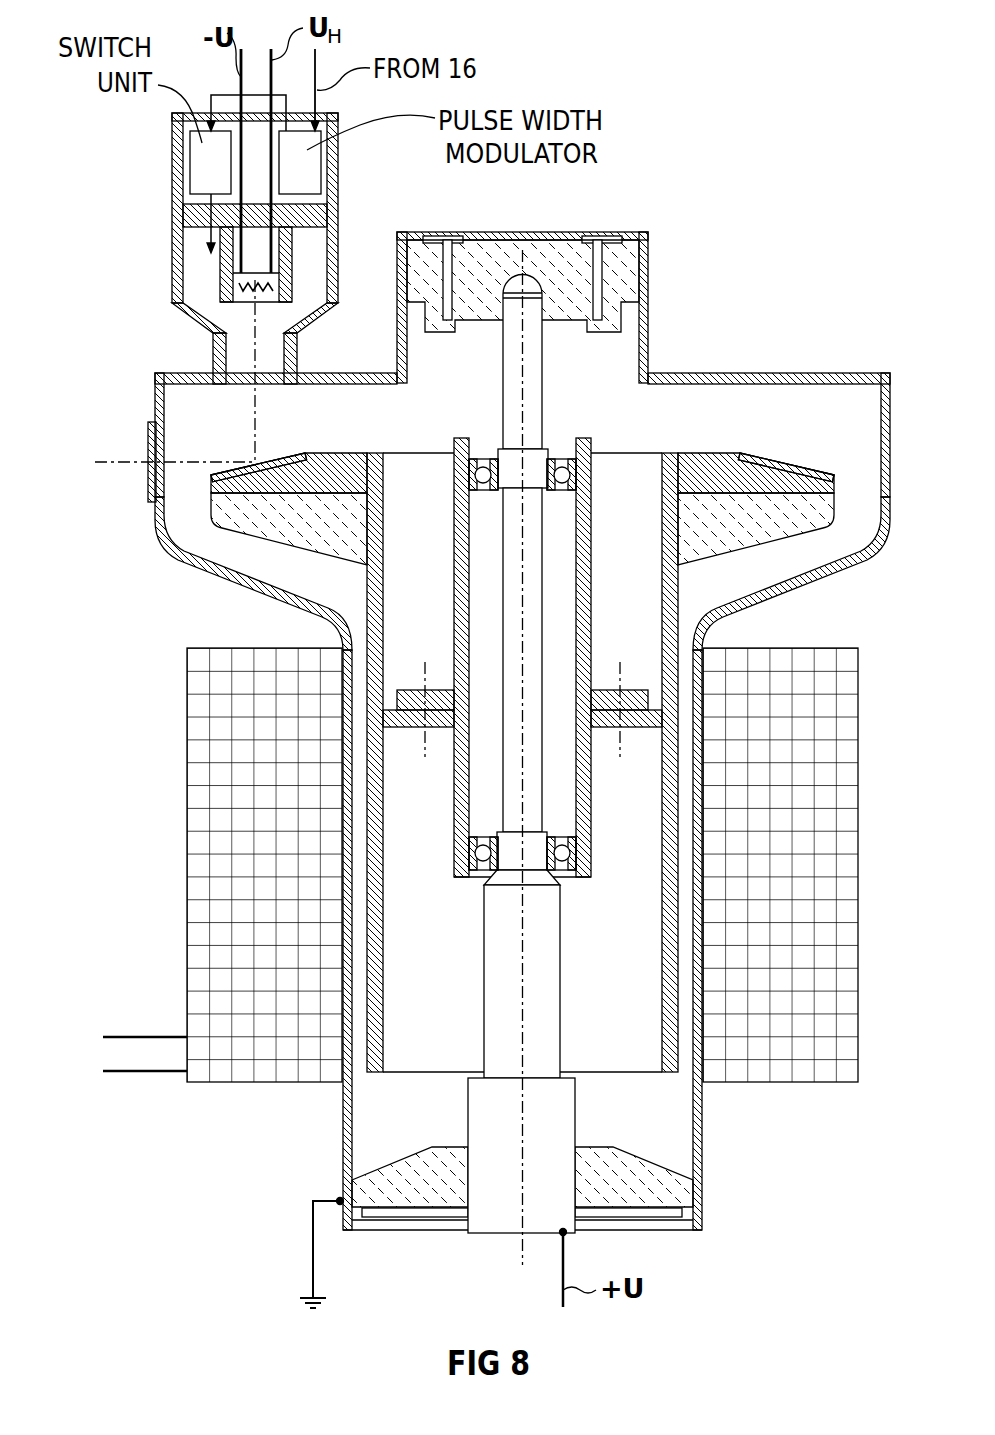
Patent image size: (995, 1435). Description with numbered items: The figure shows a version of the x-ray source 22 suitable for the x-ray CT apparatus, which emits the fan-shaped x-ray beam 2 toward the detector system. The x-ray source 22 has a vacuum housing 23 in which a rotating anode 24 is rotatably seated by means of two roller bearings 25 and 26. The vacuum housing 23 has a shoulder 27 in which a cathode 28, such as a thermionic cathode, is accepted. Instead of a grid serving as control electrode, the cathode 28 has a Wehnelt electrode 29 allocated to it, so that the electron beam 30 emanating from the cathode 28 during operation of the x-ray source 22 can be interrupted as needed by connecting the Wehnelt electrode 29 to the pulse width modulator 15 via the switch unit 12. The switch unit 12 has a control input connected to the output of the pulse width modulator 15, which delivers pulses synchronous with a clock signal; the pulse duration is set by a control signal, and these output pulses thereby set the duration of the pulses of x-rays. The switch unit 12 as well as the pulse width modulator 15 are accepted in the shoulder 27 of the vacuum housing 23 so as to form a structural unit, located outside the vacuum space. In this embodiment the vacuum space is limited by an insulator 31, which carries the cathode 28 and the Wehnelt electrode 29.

The fan-shaped x-ray beam 2 is at (112, 462).
The switch unit 12 is at (197, 165).
The pulse width modulator 15 is at (310, 167).
The x-ray source 22 is at (745, 266).
The vacuum housing 23 is at (786, 373).
The rotating anode 24 is at (836, 482).
The roller bearing 25 is at (477, 858).
The roller bearing 26 is at (469, 477).
The shoulder 27 is at (177, 248).
The cathode 28 is at (258, 282).
The Wehnelt electrode 29 is at (227, 292).
The electron beam 30 is at (257, 424).
The insulator 31 is at (195, 217).